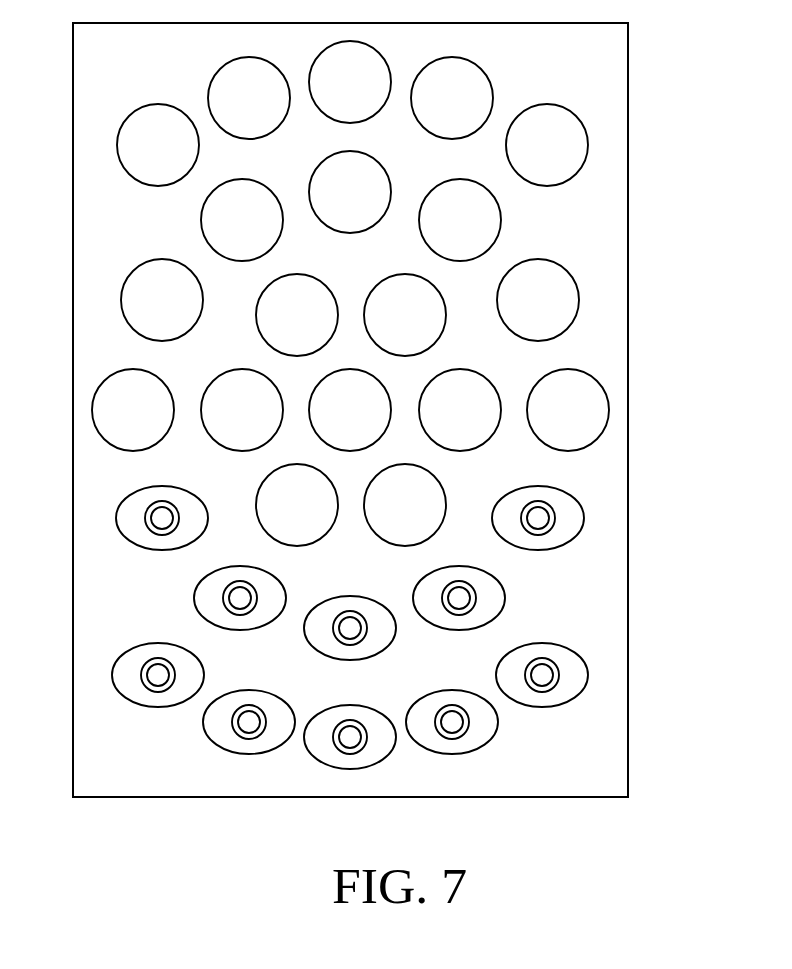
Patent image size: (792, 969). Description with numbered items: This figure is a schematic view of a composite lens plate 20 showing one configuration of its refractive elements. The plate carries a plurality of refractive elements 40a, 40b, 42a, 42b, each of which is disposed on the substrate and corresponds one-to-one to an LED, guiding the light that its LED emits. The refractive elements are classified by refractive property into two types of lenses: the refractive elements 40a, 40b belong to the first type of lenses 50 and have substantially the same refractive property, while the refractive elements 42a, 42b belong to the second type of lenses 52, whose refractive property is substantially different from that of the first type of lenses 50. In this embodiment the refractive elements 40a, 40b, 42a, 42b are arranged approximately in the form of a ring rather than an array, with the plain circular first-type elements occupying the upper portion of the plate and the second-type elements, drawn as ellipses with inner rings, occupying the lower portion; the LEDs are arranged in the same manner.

The composite lens plate 20 is at (611, 271).
The refractive element 40a is at (567, 143).
The refractive element 40b is at (472, 85).
The first type of lenses 50 is at (707, 23).
The refractive element 42a is at (577, 517).
The refractive element 42b is at (593, 672).
The second type of lenses 52 is at (707, 513).